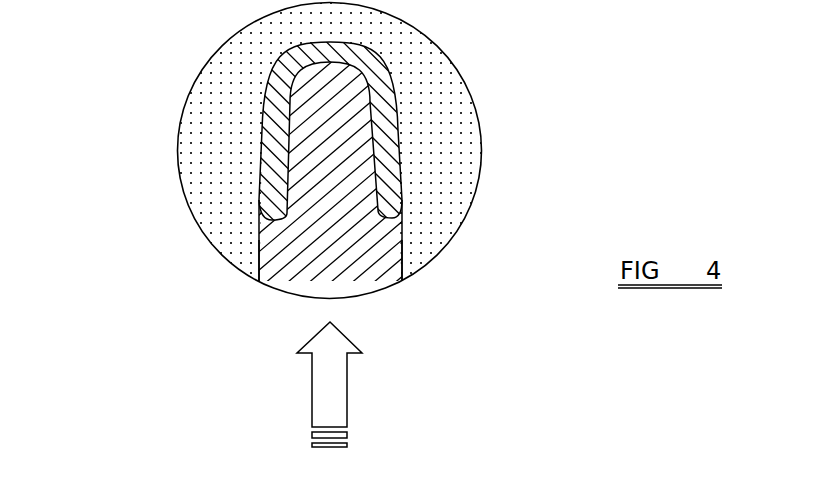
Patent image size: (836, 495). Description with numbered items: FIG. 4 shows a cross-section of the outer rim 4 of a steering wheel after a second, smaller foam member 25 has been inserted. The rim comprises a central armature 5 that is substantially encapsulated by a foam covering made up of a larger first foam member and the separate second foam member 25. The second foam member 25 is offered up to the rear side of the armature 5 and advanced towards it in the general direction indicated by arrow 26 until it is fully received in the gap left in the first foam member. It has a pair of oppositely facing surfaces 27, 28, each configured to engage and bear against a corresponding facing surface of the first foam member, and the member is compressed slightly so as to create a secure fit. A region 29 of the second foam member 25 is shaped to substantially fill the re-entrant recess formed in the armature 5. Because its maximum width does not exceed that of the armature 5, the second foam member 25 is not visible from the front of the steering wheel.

The outer rim 4 is at (157, 105).
The region 29 is at (327, 141).
The armature 5 is at (392, 162).
The facing surface 28 is at (403, 253).
The facing surface 27 is at (258, 253).
The second foam member 25 is at (373, 269).
The arrow 26 is at (343, 383).